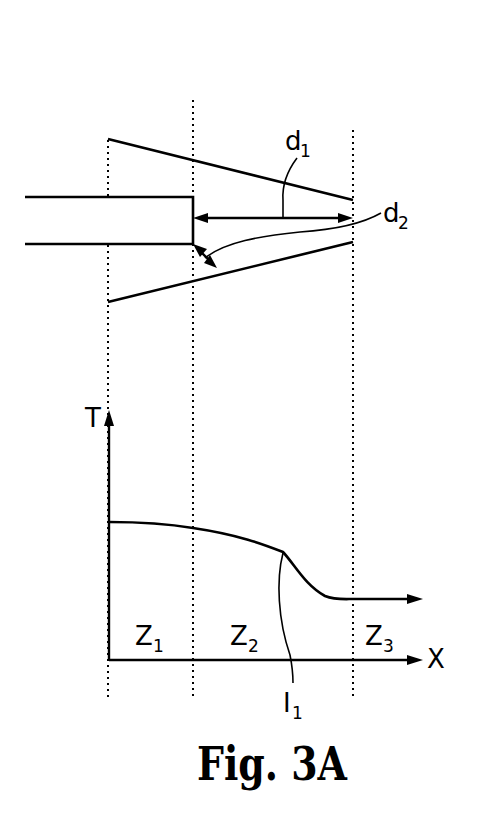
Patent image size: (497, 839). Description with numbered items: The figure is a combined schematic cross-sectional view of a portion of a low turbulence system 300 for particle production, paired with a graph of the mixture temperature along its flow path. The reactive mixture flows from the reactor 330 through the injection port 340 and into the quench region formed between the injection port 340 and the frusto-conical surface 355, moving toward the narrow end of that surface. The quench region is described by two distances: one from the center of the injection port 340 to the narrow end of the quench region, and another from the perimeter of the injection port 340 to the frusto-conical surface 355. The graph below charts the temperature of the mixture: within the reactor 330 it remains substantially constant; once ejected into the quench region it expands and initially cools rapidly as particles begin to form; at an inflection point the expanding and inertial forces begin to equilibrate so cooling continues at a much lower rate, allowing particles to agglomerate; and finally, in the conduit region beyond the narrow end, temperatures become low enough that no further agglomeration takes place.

The low turbulence system 300 is at (100, 43).
The reactor 330 is at (109, 220).
The injection port 340 is at (197, 194).
The frusto-conical surface 355 is at (295, 257).